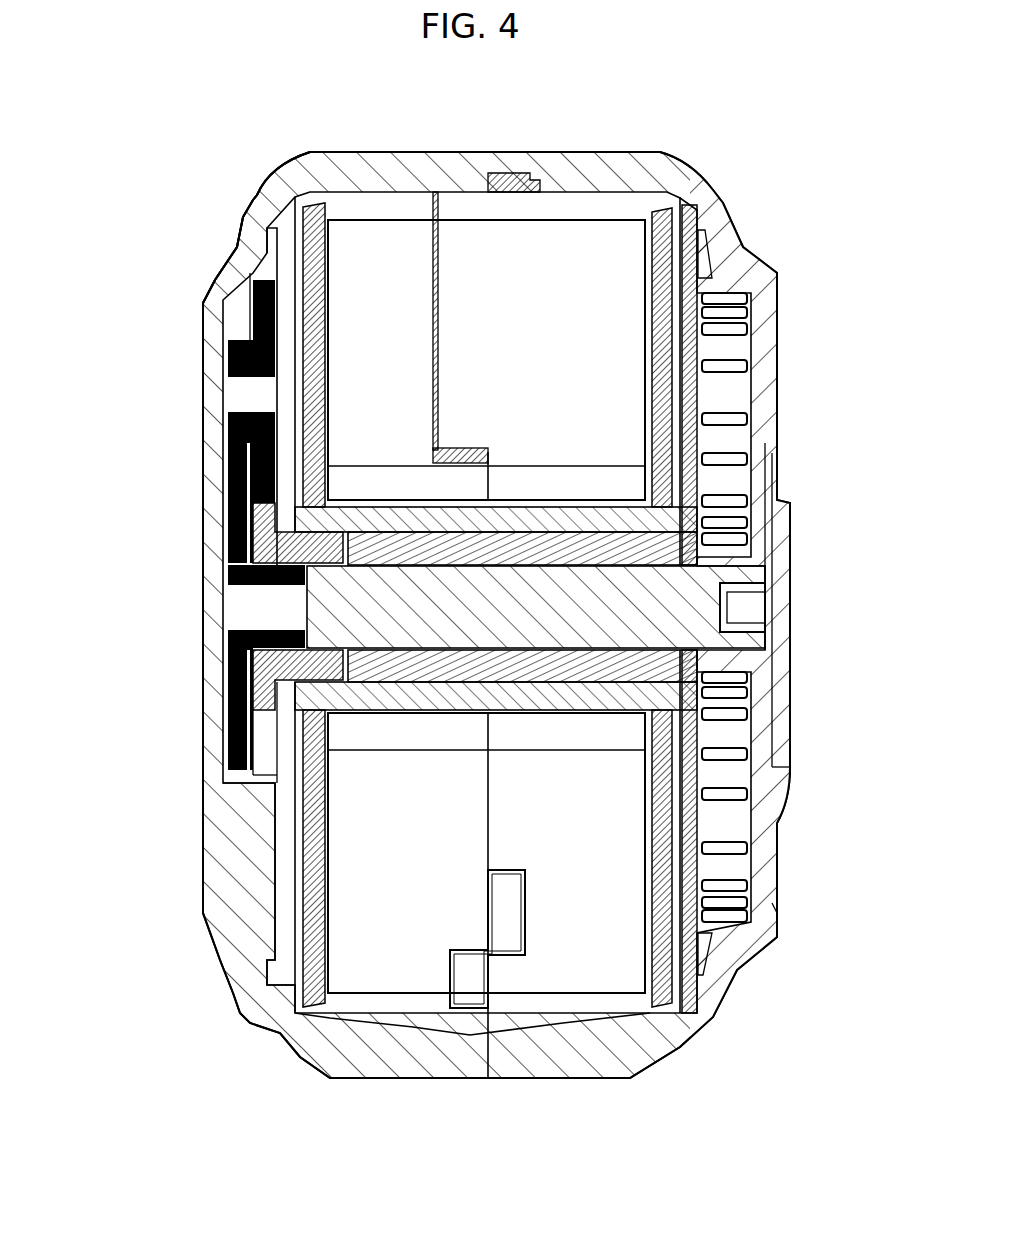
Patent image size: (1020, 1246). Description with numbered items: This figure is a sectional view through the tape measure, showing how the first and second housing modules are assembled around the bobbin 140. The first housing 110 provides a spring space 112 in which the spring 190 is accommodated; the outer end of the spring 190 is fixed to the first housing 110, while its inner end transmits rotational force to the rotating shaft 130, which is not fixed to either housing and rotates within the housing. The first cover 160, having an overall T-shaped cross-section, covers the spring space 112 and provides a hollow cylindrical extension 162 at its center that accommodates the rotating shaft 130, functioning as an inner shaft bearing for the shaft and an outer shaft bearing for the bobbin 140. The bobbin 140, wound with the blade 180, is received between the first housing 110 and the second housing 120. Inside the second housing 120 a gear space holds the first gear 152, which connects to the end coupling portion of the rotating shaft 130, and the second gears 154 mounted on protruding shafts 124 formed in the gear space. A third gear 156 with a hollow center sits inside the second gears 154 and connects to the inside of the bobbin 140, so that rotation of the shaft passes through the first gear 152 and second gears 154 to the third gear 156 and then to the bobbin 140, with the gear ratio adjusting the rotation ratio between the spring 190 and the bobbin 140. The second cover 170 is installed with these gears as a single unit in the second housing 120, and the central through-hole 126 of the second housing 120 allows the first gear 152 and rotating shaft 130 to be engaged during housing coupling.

The first housing 110 is at (758, 250).
The spring space 112 is at (716, 822).
The second housing 120 is at (246, 212).
The protruding shaft 124 is at (245, 395).
The central through-hole 126 is at (214, 606).
The rotating shaft 130 is at (627, 616).
The bobbin 140 is at (657, 697).
The first gear 152 is at (228, 488).
The second gear 154 is at (238, 340).
The third gear 156 is at (236, 549).
The first cover 160 is at (675, 468).
The cylindrical extension 162 is at (612, 553).
The second cover 170 is at (283, 807).
The blade 180 is at (568, 218).
The spring 190 is at (738, 413).